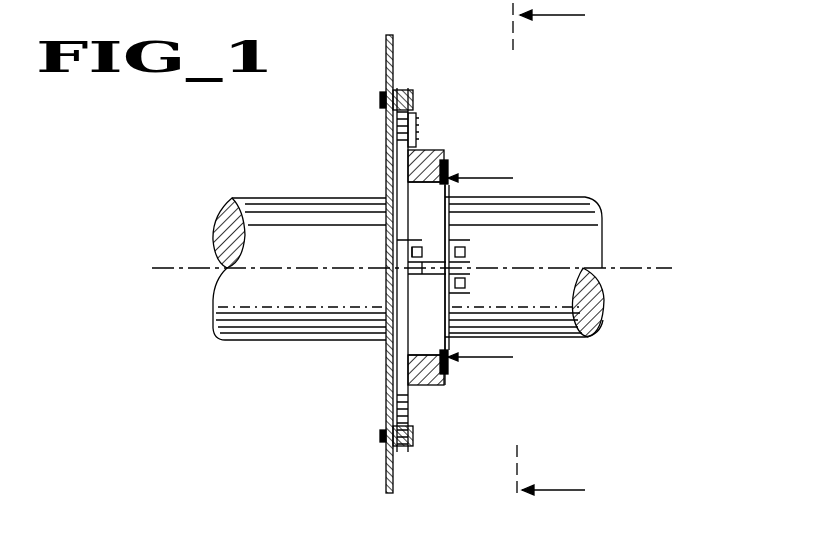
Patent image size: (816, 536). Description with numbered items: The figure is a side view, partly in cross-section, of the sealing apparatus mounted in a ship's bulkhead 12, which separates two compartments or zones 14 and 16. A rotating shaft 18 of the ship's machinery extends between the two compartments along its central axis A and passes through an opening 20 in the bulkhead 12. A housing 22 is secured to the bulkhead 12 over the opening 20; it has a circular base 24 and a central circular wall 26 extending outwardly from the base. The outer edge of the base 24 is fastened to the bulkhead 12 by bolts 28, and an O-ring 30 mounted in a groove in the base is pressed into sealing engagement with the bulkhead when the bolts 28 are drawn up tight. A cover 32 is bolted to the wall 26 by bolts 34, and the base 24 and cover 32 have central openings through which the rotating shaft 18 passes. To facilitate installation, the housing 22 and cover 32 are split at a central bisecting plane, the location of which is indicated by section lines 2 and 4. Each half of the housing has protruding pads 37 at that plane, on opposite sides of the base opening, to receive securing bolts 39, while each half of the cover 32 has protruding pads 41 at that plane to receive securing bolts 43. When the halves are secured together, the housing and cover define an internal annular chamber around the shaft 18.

The bulkhead 12 is at (386, 42).
The compartment 14 is at (300, 145).
The compartment 16 is at (533, 108).
The rotating shaft 18 is at (220, 312).
The opening 20 is at (396, 110).
The housing 22 is at (443, 394).
The circular base 24 is at (418, 122).
The central circular wall 26 is at (426, 152).
The bolts 28 is at (412, 94).
The O-ring 30 is at (382, 92).
The cover 32 is at (452, 230).
The bolts 34 is at (446, 162).
The protruding pads 37 is at (422, 268).
The securing bolts 39 is at (412, 246).
The protruding pads 41 is at (466, 283).
The securing bolts 43 is at (464, 252).
The section line 2- 2 is at (557, 252).
The section line 4- 4 is at (481, 269).
The central axis A is at (648, 268).